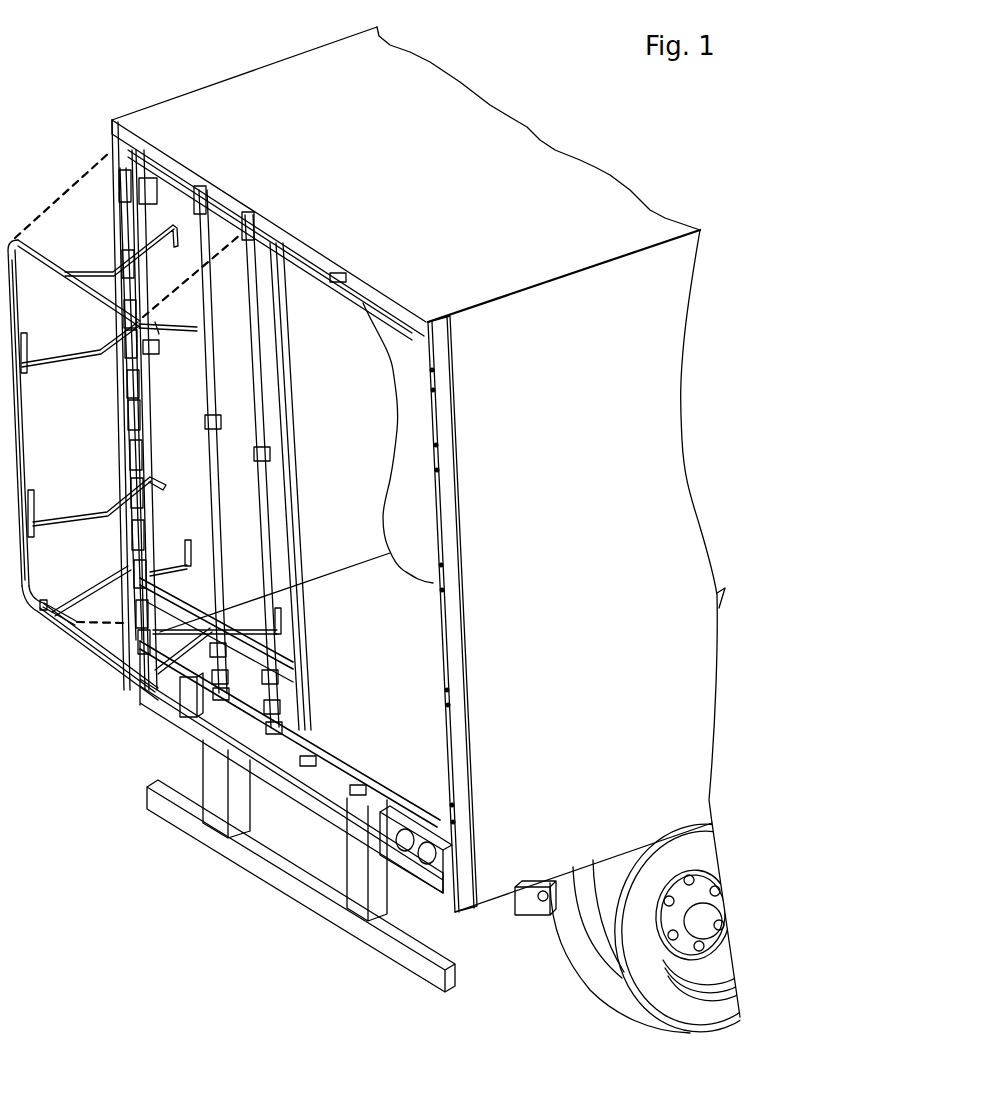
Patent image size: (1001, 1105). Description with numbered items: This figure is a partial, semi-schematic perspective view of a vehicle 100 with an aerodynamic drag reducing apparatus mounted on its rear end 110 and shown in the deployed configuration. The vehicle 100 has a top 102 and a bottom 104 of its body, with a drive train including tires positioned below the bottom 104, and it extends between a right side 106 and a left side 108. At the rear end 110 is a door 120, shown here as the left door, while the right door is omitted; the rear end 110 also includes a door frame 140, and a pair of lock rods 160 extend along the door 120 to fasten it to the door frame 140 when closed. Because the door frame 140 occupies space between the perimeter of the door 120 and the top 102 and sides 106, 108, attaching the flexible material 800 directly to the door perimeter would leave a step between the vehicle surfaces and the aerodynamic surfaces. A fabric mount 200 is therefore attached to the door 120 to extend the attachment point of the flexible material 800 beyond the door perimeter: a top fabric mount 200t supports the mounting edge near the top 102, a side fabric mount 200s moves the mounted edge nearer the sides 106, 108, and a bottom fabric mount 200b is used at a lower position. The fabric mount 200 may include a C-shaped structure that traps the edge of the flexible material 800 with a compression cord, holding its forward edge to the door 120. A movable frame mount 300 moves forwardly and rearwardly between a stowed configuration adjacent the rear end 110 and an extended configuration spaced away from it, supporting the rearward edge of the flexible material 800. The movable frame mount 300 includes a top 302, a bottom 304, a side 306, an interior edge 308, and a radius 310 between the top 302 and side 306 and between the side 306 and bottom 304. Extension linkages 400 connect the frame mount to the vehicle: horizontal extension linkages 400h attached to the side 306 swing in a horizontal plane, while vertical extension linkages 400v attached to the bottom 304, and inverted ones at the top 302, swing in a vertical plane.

The vehicle 100 is at (583, 71).
The top 102 is at (406, 188).
The bottom 104 is at (488, 906).
The right side 106 is at (579, 532).
The left side 108 is at (128, 112).
The rear end 110 is at (163, 713).
The door 120 is at (194, 408).
The door frame 140 is at (355, 290).
The lock rods 160 is at (258, 397).
The fabric mount 200 is at (214, 445).
The top fabric mount 200t is at (165, 176).
The side fabric mount 200s is at (117, 222).
The bottom fabric mount 200b is at (280, 645).
The movable frame mount 300 is at (82, 643).
The top 302 is at (86, 288).
The bottom 304 is at (107, 662).
The side 306 is at (18, 420).
The interior edge 308 is at (136, 396).
The radius 310 is at (36, 606).
The extension linkages 400 is at (109, 299).
The horizontal extension linkages 400h is at (60, 513).
The vertical extension linkages 400v is at (100, 583).
The flexible material 800 is at (76, 166).